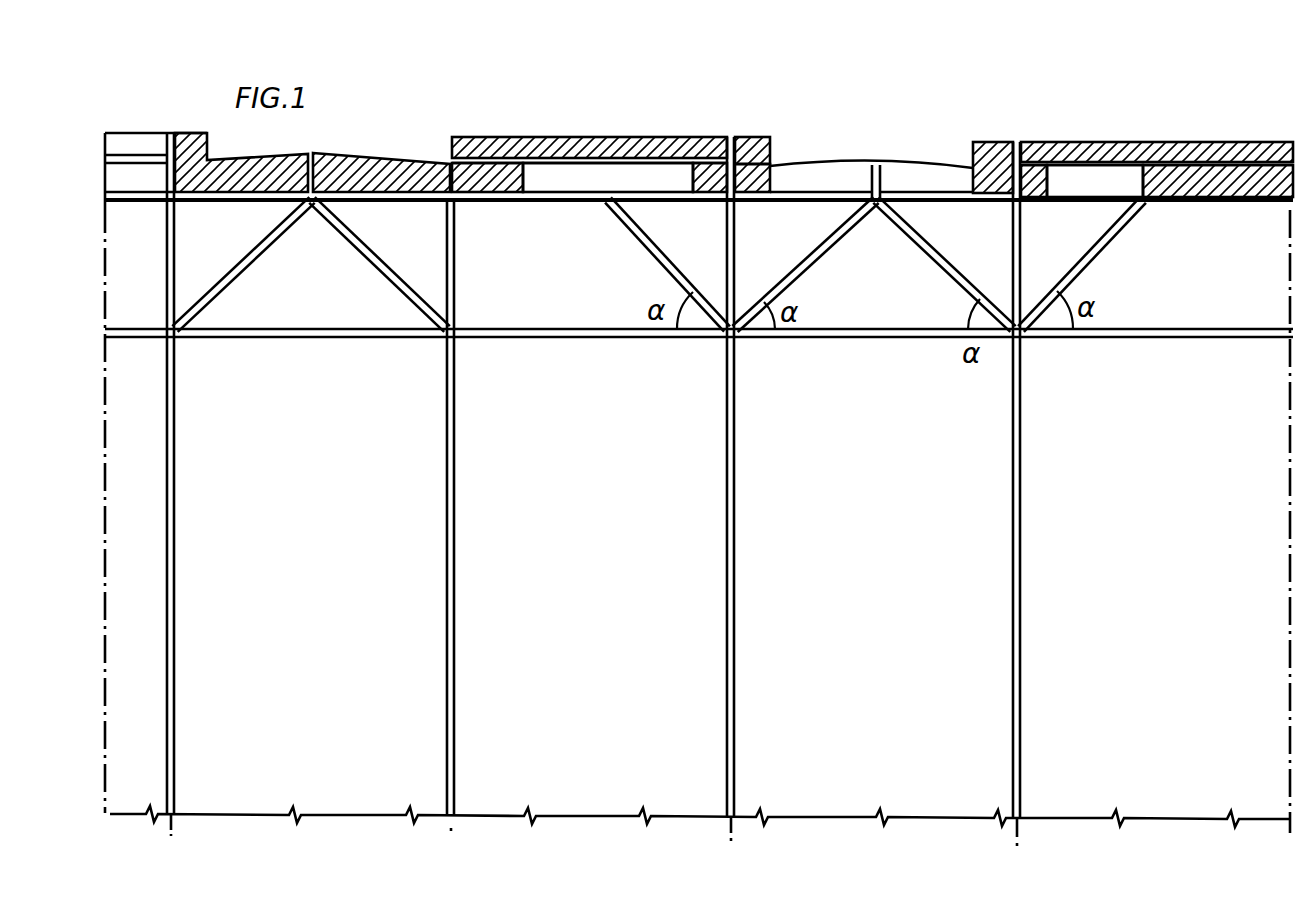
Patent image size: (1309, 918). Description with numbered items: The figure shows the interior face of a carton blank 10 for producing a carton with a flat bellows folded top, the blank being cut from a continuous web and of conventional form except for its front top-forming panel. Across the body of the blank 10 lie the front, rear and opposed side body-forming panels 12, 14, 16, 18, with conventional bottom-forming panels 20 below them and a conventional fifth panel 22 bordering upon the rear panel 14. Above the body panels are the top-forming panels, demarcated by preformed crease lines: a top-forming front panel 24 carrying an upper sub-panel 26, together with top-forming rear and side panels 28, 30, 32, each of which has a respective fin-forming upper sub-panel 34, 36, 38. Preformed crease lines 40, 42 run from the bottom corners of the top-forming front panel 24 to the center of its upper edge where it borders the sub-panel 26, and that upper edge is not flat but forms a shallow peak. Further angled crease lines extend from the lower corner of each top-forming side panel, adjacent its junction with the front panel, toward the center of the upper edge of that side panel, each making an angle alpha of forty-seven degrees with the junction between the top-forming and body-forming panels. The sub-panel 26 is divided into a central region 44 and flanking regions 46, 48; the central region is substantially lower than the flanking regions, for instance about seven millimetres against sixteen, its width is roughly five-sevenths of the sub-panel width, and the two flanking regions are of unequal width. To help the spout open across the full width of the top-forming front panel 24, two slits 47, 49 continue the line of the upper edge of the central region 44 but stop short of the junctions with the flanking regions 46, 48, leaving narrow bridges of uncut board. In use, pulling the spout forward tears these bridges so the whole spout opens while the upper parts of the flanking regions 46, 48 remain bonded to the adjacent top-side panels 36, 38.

The blank 10 is at (326, 852).
The front body-forming panel 12 is at (890, 797).
The rear body-forming panel 14 is at (375, 793).
The side body-forming panel 16 is at (620, 797).
The side body-forming panel 18 is at (1162, 799).
The bottom-forming panels 20 is at (1185, 855).
The fifth panel 22 is at (163, 845).
The top-forming front panel 24 is at (840, 318).
The upper sub-panel 26 is at (890, 182).
The top-forming rear panel 28 is at (320, 307).
The top-forming side panel 30 is at (553, 325).
The top-forming side panel 32 is at (1242, 326).
The fin-forming upper sub-panel 34 is at (402, 180).
The fin-forming upper sub-panel 36 is at (593, 143).
The fin-forming upper sub-panel 38 is at (1073, 178).
The preformed crease line 40 is at (790, 285).
The preformed crease line 42 is at (973, 302).
The central region 44 is at (840, 178).
The flanking region 46 is at (770, 148).
The slit 47 is at (752, 183).
The flanking region 48 is at (975, 172).
The slit 49 is at (997, 173).